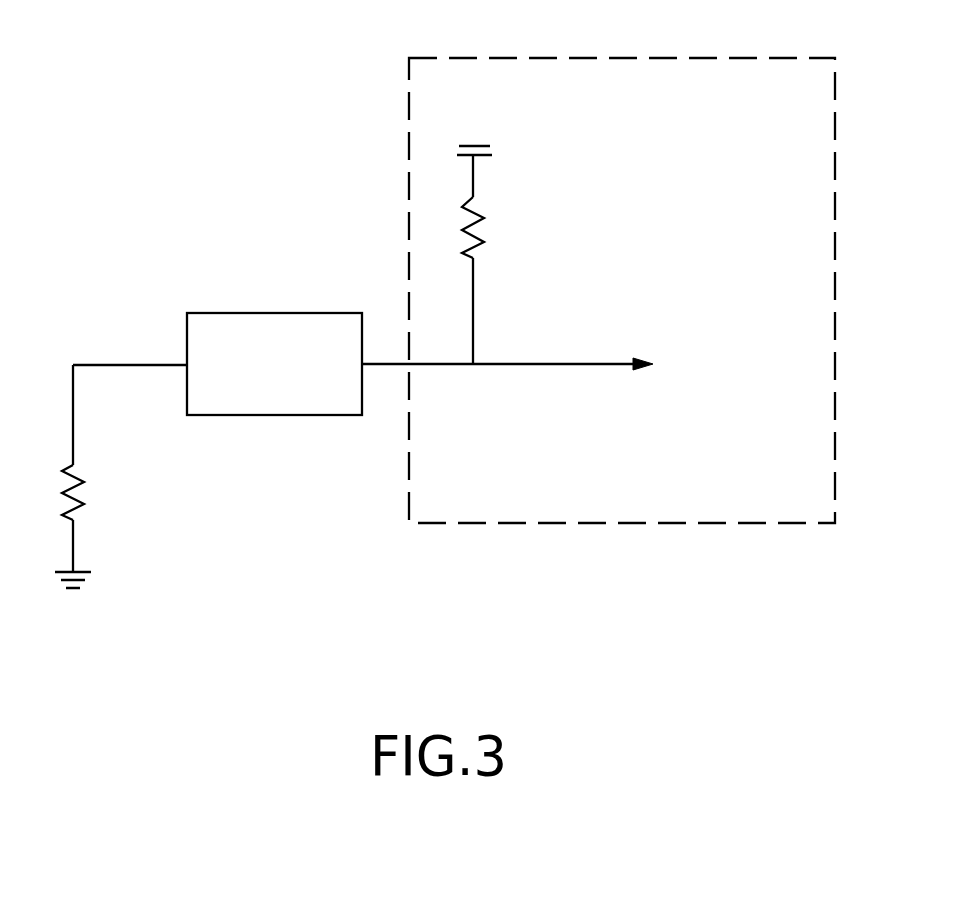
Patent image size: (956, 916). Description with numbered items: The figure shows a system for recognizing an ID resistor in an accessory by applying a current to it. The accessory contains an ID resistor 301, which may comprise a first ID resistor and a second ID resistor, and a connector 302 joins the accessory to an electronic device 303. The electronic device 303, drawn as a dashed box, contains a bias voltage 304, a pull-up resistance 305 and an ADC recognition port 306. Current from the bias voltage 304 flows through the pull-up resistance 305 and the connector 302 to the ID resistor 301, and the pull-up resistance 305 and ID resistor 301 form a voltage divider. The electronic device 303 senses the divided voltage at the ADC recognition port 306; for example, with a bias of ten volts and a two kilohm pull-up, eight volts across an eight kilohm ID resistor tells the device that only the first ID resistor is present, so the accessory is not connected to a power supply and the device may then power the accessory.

The ID resistor 301 is at (70, 468).
The connector 302 is at (322, 313).
The electronic device 303 is at (746, 58).
The bias voltage 304 is at (488, 146).
The pull-up resistance 305 is at (468, 207).
The ADC recognition port 306 is at (723, 389).